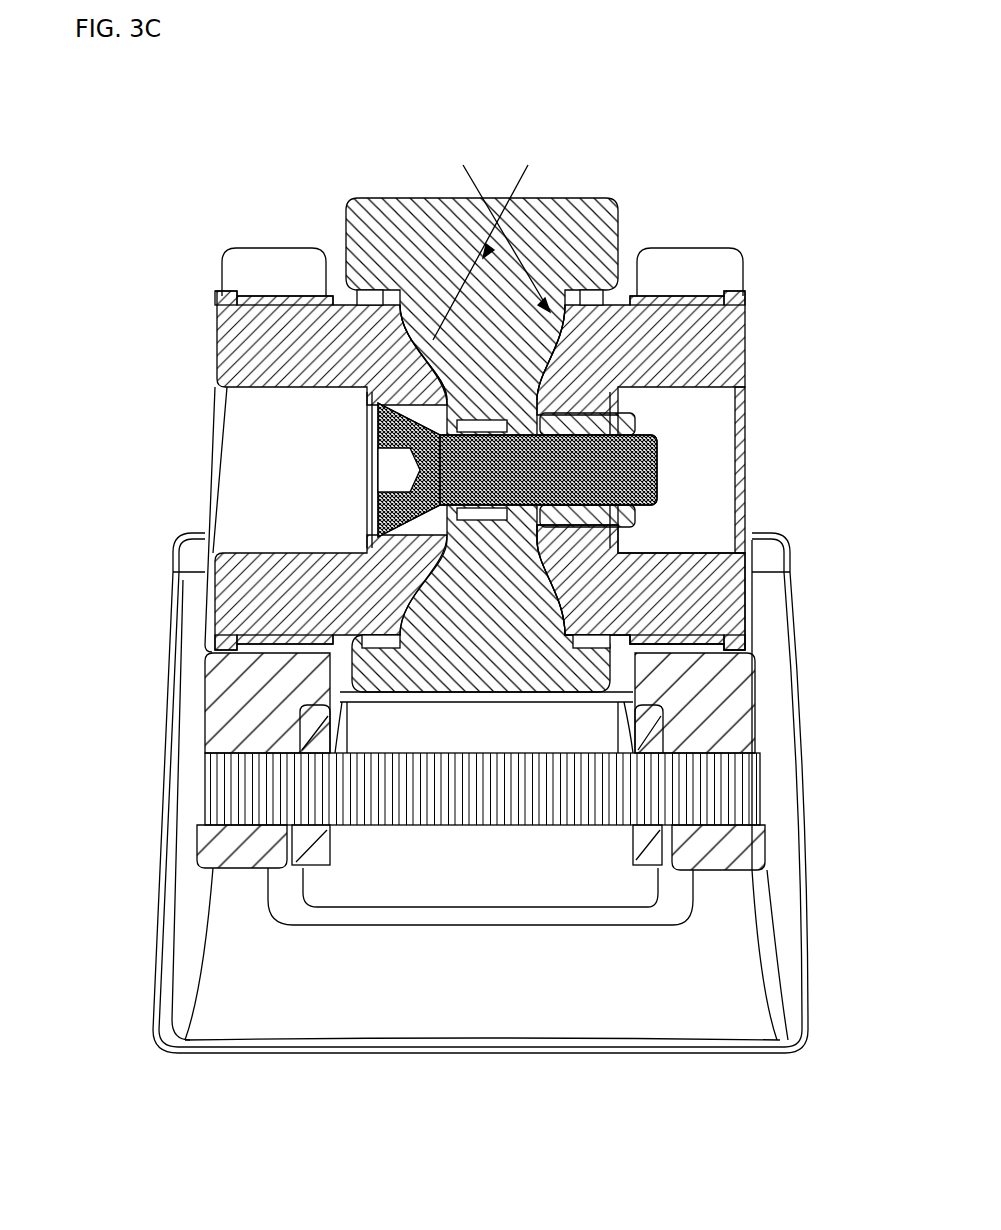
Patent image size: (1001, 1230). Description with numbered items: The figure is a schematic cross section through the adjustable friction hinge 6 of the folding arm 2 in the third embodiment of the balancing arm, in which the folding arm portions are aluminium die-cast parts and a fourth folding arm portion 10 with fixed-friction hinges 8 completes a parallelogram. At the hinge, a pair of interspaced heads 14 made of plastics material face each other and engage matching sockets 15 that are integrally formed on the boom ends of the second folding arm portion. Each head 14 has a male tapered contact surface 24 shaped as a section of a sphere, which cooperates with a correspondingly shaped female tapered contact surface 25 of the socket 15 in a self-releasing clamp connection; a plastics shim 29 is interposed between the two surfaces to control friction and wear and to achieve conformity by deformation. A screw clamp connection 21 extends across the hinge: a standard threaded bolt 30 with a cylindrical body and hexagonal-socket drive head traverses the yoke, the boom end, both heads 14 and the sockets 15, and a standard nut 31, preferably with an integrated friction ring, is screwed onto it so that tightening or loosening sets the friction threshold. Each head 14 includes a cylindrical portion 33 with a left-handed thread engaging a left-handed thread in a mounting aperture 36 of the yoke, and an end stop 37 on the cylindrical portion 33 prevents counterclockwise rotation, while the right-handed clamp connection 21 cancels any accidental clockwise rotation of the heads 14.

The folding arm 2 is at (419, 836).
The friction hinge 6 is at (138, 519).
The further friction hinge 8 is at (213, 783).
The fourth folding arm portion 10 is at (645, 833).
The head 14 is at (433, 300).
The socket 15 is at (410, 362).
The screw clamp connection 21 is at (354, 470).
The male tapered contact surface 24 is at (491, 240).
The female tapered contact surface 25 is at (743, 323).
The shim 29 is at (268, 662).
The threaded bolt 30 is at (657, 445).
The nut 31 is at (657, 483).
The cylindrical portion 33 is at (690, 592).
The mounting aperture 36 is at (527, 221).
The end stop 37 is at (215, 300).